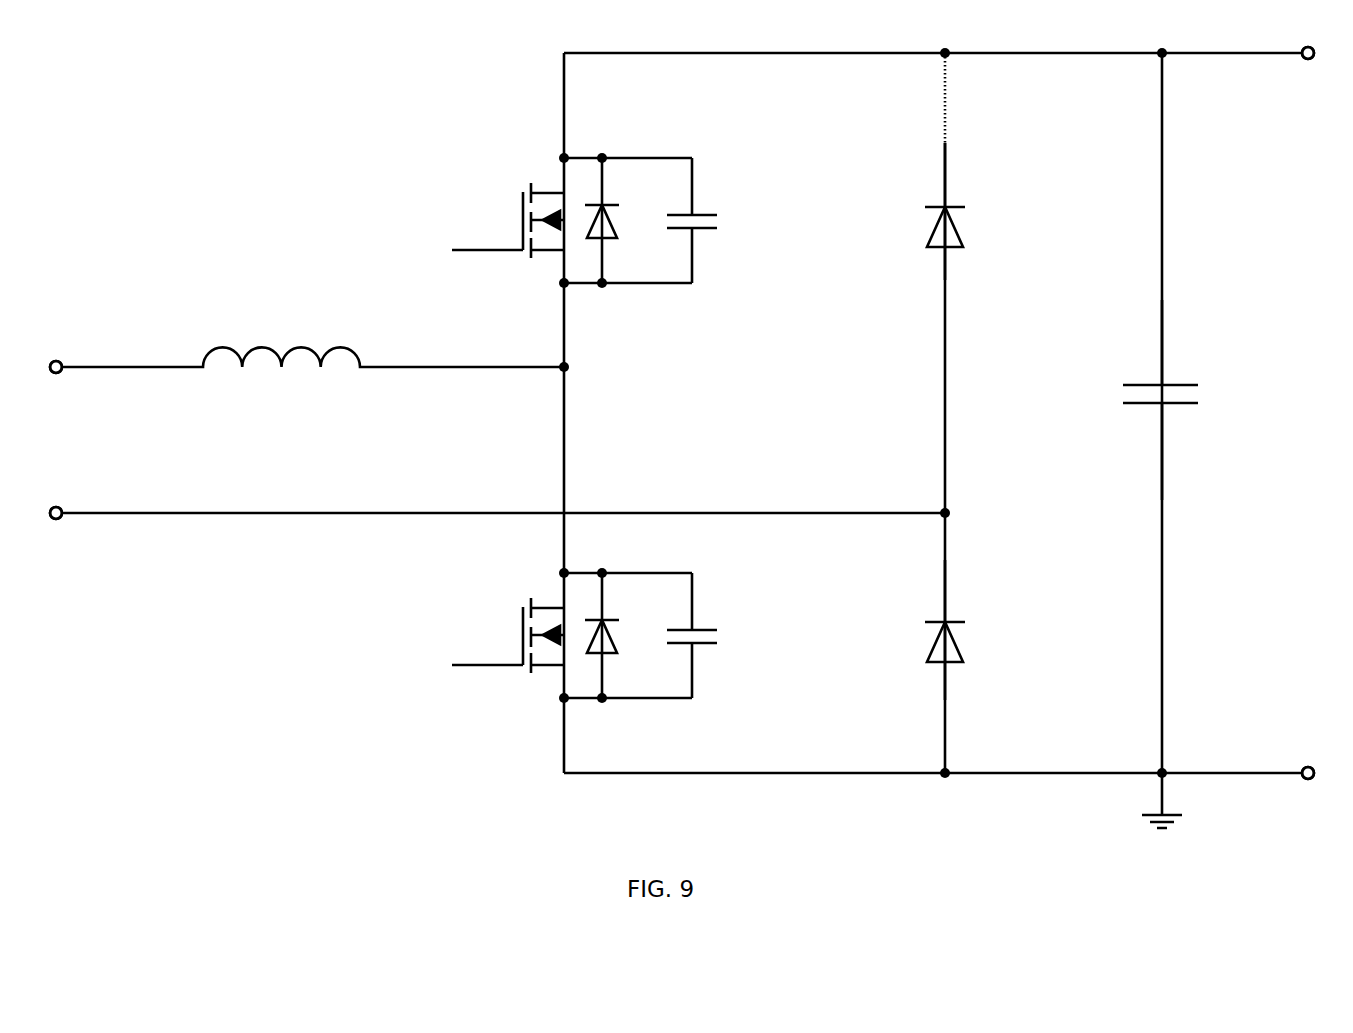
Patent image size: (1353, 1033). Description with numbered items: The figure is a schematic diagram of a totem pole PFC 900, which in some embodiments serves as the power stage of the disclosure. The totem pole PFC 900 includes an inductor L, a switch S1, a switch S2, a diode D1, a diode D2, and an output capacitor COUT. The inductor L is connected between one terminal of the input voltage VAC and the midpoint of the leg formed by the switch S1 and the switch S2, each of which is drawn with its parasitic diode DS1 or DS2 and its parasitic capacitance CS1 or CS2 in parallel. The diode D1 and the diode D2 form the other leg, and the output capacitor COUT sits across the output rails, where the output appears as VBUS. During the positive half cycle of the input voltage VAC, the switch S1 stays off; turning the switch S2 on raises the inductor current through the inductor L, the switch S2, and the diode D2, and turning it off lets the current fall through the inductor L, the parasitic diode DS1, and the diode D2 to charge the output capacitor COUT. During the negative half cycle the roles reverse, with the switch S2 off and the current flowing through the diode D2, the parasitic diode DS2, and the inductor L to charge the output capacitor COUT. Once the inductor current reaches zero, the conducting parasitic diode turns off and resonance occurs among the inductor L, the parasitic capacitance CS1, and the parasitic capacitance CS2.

The totem pole PFC 900 is at (303, 233).
The inductor L is at (313, 334).
The switch S1 is at (540, 272).
The switch S2 is at (540, 687).
The parasitic diode DS1 is at (625, 220).
The parasitic diode DS2 is at (625, 635).
The parasitic capacitance CS1 is at (717, 220).
The parasitic capacitance CS2 is at (717, 635).
The diode D1 is at (928, 211).
The diode D2 is at (928, 630).
The output capacitor COUT is at (1124, 400).
The input voltage VAC is at (68, 440).
The DC bus output voltage terminals VBUS is at (1294, 413).